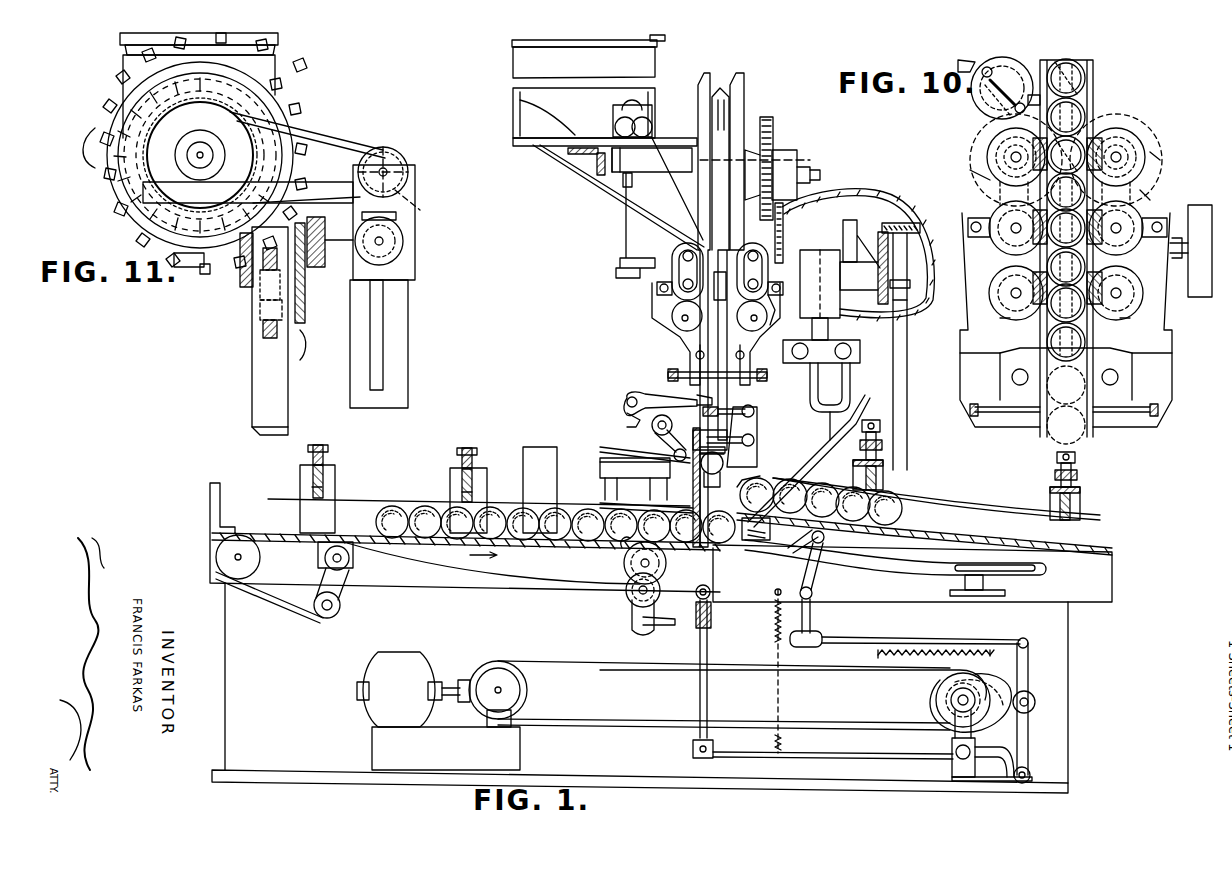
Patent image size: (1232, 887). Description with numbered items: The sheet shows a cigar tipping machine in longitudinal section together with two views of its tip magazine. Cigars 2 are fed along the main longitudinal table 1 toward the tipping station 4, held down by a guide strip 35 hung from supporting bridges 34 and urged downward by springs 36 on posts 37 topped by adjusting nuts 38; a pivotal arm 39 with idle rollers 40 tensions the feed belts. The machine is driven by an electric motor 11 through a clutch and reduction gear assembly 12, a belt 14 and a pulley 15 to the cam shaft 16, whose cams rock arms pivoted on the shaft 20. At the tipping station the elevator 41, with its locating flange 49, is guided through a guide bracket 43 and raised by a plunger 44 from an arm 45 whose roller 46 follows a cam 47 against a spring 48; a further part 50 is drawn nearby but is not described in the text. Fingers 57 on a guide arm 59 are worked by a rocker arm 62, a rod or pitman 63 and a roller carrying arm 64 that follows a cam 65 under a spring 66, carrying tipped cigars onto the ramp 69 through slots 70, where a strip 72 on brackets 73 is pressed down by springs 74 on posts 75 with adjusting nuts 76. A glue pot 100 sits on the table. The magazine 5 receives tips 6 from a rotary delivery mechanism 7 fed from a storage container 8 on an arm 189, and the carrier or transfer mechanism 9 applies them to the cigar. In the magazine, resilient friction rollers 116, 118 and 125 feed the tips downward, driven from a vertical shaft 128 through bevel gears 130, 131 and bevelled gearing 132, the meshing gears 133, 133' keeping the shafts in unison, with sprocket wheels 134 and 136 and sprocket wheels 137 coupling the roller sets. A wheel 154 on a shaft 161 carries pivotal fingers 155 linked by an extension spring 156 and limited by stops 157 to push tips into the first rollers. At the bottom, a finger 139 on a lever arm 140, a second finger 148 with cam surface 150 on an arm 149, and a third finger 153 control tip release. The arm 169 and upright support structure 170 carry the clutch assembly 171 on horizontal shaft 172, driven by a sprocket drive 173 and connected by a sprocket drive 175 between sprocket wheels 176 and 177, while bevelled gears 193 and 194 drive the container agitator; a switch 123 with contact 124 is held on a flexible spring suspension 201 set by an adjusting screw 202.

In FIG. 1, the main longitudinal table 1 is at (1112, 565).
In FIG. 1, the cigars 2 is at (395, 510).
In FIG. 1, the tipping station 4 is at (731, 501).
In FIG. 1, the magazine 5 is at (700, 312).
In FIG. 11, the tips 6 is at (108, 186).
In FIG. 10, the tips 6 is at (1090, 102).
In FIG. 1, the tips 6 is at (652, 118).
In FIG. 11, the rotary delivery mechanism 7 is at (312, 100).
In FIG. 1, the rotary delivery mechanism 7 is at (754, 84).
In FIG. 1, the storage container 8 is at (528, 66).
In FIG. 1, the carrier or transfer mechanism 9 is at (750, 460).
In FIG. 1, the electric motor 11 is at (398, 653).
In FIG. 1, the clutch and reduction gear assembly 12 is at (520, 690).
In FIG. 1, the belt 14 is at (870, 670).
In FIG. 1, the pulley 15 is at (945, 690).
In FIG. 1, the cam shaft 16 is at (958, 708).
In FIG. 1, the shaft 20 is at (1030, 774).
In FIG. 1, the supporting bridges 34 is at (487, 500).
In FIG. 1, the guide strip 35 is at (382, 504).
In FIG. 1, the springs 36 is at (474, 478).
In FIG. 1, the posts 37 is at (474, 495).
In FIG. 1, the adjusting nuts 38 is at (462, 454).
In FIG. 1, the pivotal arm 39 is at (342, 600).
In FIG. 1, the idle rollers 40 is at (352, 560).
In FIG. 1, the elevator 41 is at (665, 568).
In FIG. 1, the guide bracket 43 is at (712, 620).
In FIG. 1, the plunger 44 is at (708, 643).
In FIG. 1, the arm 45 is at (818, 752).
In FIG. 1, the roller 46 is at (953, 760).
In FIG. 1, the cam 47 is at (1008, 726).
In FIG. 1, the spring 48 is at (780, 672).
In FIG. 1, the locating flange 49 is at (703, 553).
In FIG. 1, the stop block 50 is at (700, 442).
In FIG. 1, the fingers 57 is at (800, 555).
In FIG. 1, the guide arm 59 is at (910, 566).
In FIG. 1, the rocker arm 62 is at (815, 570).
In FIG. 1, the rod or pitman 63 is at (880, 637).
In FIG. 1, the roller carrying arm 64 is at (1030, 672).
In FIG. 1, the cam 65 is at (1000, 686).
In FIG. 1, the spring 66 is at (925, 650).
In FIG. 1, the ramp 69 is at (905, 530).
In FIG. 1, the slots 70 is at (756, 529).
In FIG. 1, the strip 72 is at (970, 505).
In FIG. 1, the brackets 73 is at (1080, 492).
In FIG. 1, the springs 74 is at (1070, 505).
In FIG. 1, the posts 75 is at (1075, 456).
In FIG. 1, the adjusting nuts 76 is at (1077, 472).
In FIG. 1, the glue pot 100 is at (646, 480).
In FIG. 11, the resilient friction rollers 116 is at (262, 248).
In FIG. 10, the resilient friction rollers 116 is at (1146, 172).
In FIG. 11, the resilient friction rollers 118 is at (268, 285).
In FIG. 10, the resilient friction rollers 118 is at (1130, 252).
In FIG. 1, the switch 123 is at (785, 338).
In FIG. 1, the contact 124 is at (775, 300).
In FIG. 11, the resilient friction rollers 125 is at (268, 318).
In FIG. 10, the resilient friction rollers 125 is at (1143, 308).
In FIG. 11, the vertical shaft 128 is at (385, 328).
In FIG. 1, the vertical shaft 128 is at (908, 358).
In FIG. 1, the bevel gear 130 is at (898, 222).
In FIG. 1, the bevel gear 131 is at (880, 228).
In FIG. 11, the bevelled gearing 132 is at (360, 255).
In FIG. 10, the gear 133 is at (988, 160).
In FIG. 10, the gear 133' is at (1140, 155).
In FIG. 11, the sprocket wheels 134 is at (305, 260).
In FIG. 10, the sprocket wheels 134 is at (1160, 152).
In FIG. 11, the sprocket wheels 136 is at (305, 320).
In FIG. 10, the sprocket wheels 136 is at (1118, 318).
In FIG. 10, the sprocket wheels 137 is at (1150, 195).
In FIG. 1, the finger 139 is at (757, 440).
In FIG. 1, the lever arm 140 is at (756, 418).
In FIG. 1, the second finger 148 is at (626, 394).
In FIG. 1, the arm 149 is at (748, 405).
In FIG. 1, the cam surface 150 is at (626, 420).
In FIG. 1, the third finger 153 is at (690, 378).
In FIG. 10, the wheel 154 is at (1020, 55).
In FIG. 10, the pivotal fingers 155 is at (1067, 70).
In FIG. 10, the extension spring 156 is at (988, 92).
In FIG. 10, the stops 157 is at (1030, 75).
In FIG. 10, the shaft 161 is at (985, 108).
In FIG. 11, the arm 169 is at (308, 185).
In FIG. 11, the upright support structure 170 is at (405, 360).
In FIG. 1, the clutch assembly 171 is at (790, 150).
In FIG. 11, the horizontal shaft 172 is at (398, 160).
In FIG. 1, the horizontal shaft 172 is at (820, 172).
In FIG. 11, the sprocket drive 173 is at (425, 207).
In FIG. 1, the sprocket drive 173 is at (783, 240).
In FIG. 11, the sprocket drive 175 is at (325, 130).
In FIG. 11, the sprocket wheel 176 is at (392, 175).
In FIG. 11, the sprocket wheel 177 is at (190, 140).
In FIG. 1, the sprocket wheel 177 is at (775, 125).
In FIG. 1, the arm 189 is at (620, 185).
In FIG. 1, the bevelled gear 193 is at (575, 152).
In FIG. 1, the bevelled gear 194 is at (600, 170).
In FIG. 1, the flexible spring suspension 201 is at (825, 212).
In FIG. 1, the adjusting screw 202 is at (838, 300).